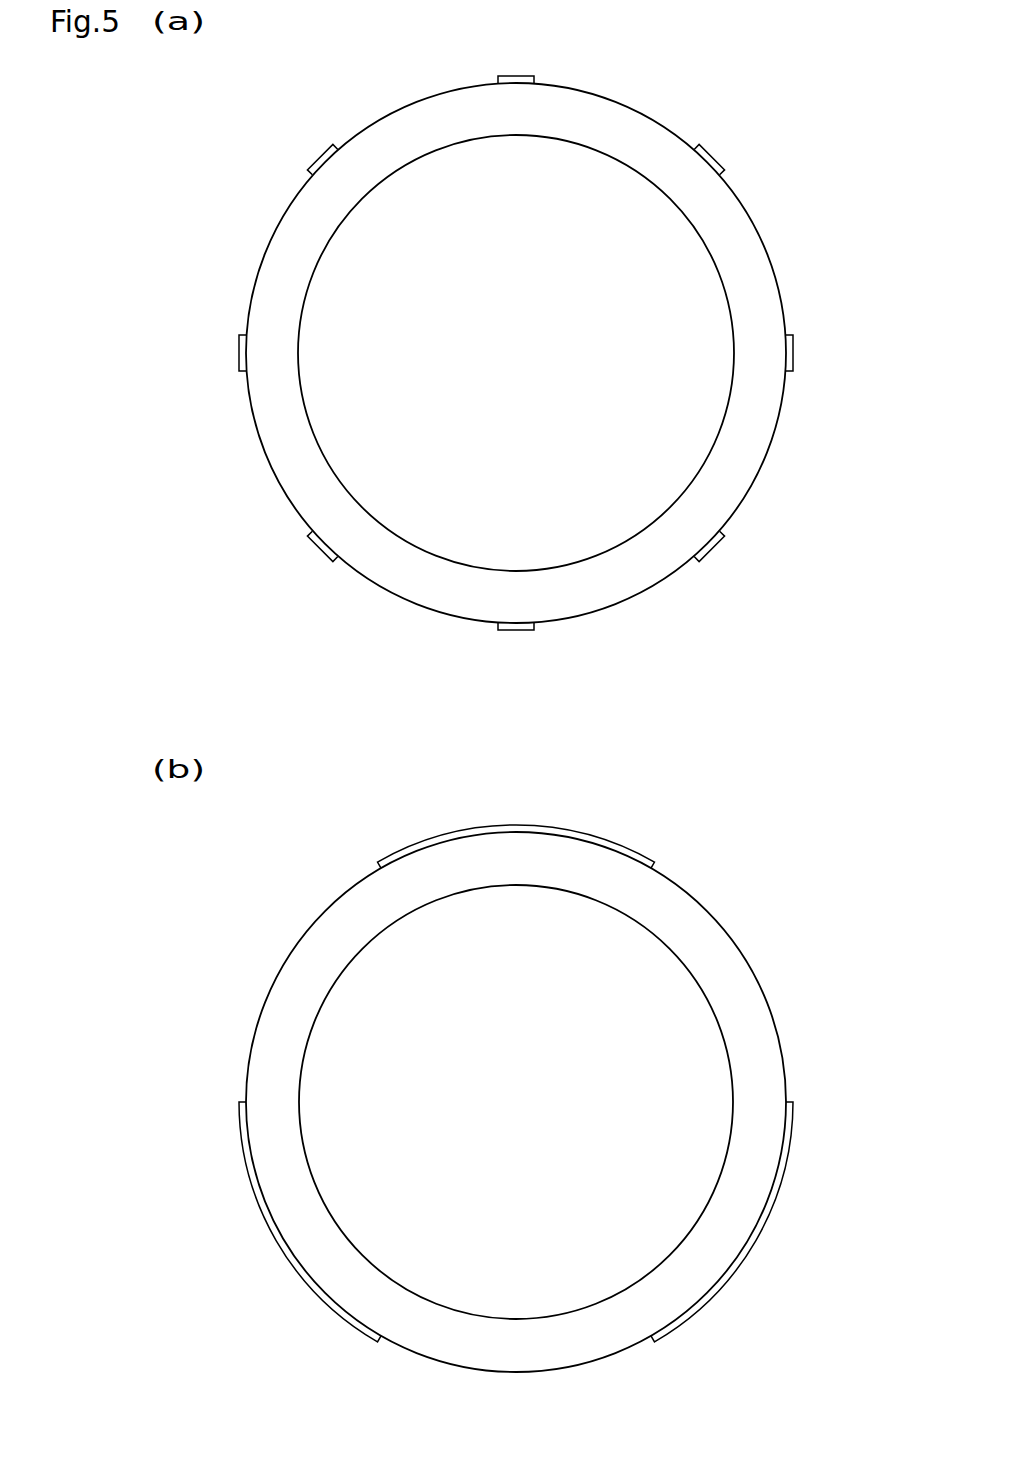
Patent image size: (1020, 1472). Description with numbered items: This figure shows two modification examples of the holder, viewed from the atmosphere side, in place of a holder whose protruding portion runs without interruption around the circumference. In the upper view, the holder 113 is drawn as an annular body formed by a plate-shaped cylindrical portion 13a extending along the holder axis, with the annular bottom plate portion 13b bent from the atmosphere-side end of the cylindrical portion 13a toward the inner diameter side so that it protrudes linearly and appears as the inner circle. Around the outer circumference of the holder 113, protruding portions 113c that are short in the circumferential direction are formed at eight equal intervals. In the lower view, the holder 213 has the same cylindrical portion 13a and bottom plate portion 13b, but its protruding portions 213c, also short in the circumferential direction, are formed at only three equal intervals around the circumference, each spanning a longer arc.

The holder 113 is at (516, 315).
The protruding portions 113c is at (521, 75).
The cylindrical portion 13a is at (756, 228).
The bottom plate portion 13b is at (755, 300).
The holder 213 is at (516, 1044).
The protruding portions 213c is at (518, 825).